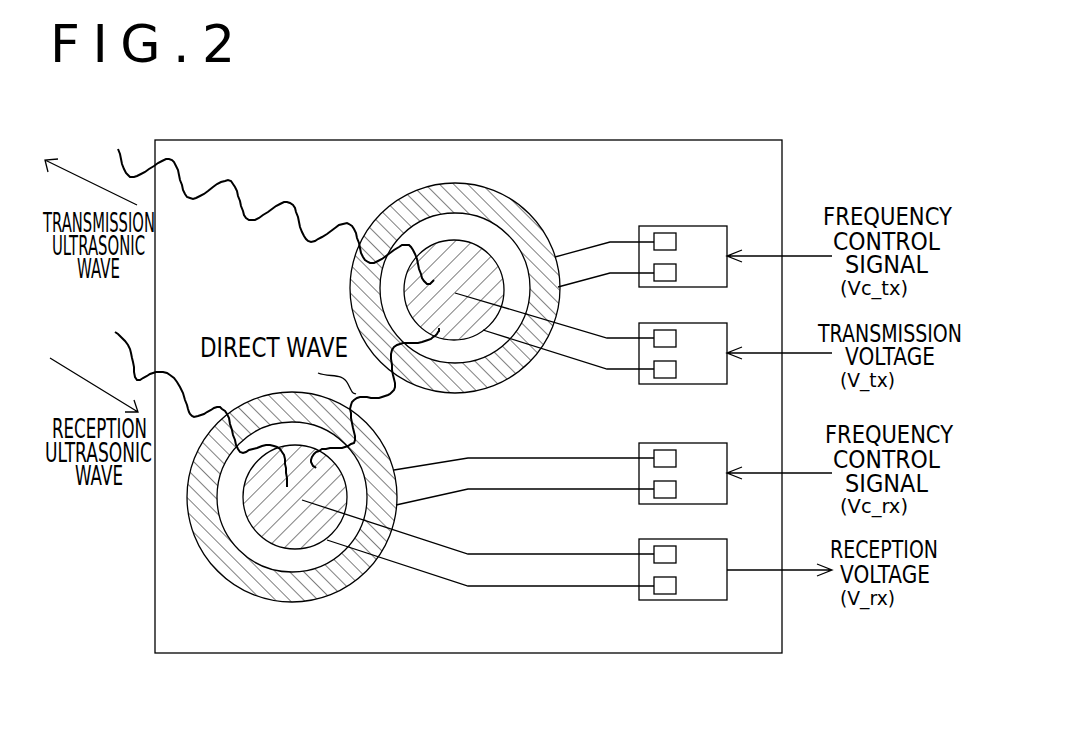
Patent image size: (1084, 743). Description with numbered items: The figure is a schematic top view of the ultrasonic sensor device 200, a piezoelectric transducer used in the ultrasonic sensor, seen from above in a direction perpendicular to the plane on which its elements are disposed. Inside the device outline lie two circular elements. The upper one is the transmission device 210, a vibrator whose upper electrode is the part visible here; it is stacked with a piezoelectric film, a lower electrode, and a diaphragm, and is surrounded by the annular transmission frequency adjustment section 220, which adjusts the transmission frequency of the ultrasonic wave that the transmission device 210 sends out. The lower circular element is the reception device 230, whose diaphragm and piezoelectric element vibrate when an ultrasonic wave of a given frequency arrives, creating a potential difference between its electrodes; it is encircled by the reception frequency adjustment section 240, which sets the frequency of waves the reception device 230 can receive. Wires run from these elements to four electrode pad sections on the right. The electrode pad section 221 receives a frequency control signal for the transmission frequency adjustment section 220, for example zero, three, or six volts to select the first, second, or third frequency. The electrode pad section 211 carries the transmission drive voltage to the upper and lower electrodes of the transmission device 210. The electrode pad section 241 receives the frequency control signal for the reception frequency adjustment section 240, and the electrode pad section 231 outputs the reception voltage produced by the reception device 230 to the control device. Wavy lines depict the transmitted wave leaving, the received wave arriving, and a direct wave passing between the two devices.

The ultrasonic sensor device 200 is at (602, 140).
The transmission device 210 is at (490, 258).
The transmission frequency adjustment section 220 is at (413, 200).
The electrode pad section for the transmission frequency adjustment section 221 is at (665, 226).
The electrode pad section for the transmission device 211 is at (665, 323).
The reception device 230 is at (303, 543).
The reception frequency adjustment section 240 is at (261, 594).
The electrode pad section for the reception frequency adjustment section 241 is at (665, 443).
The electrode pad section for the reception device 231 is at (665, 539).